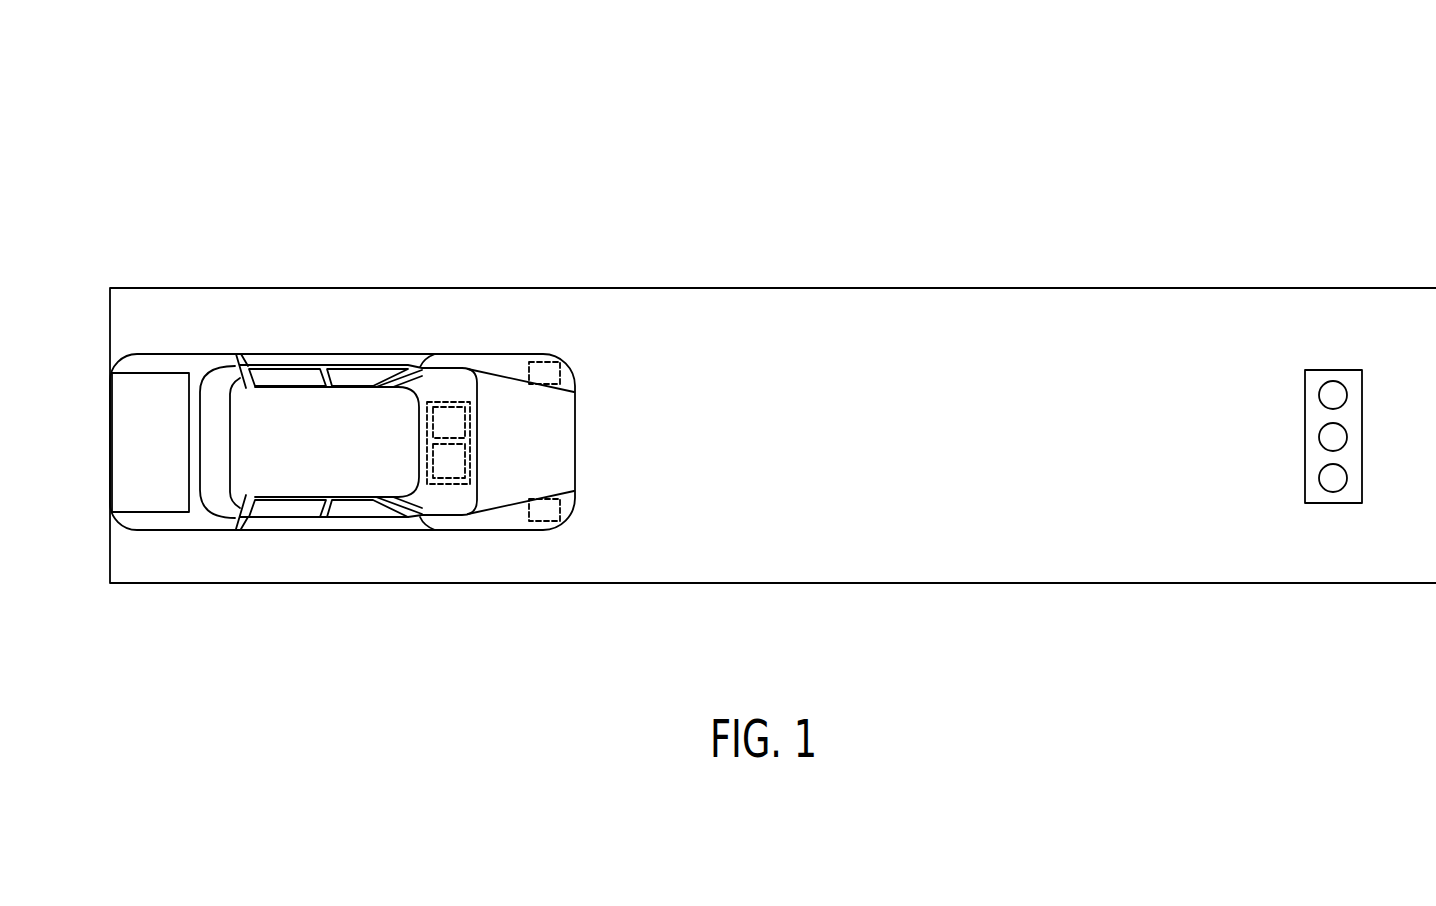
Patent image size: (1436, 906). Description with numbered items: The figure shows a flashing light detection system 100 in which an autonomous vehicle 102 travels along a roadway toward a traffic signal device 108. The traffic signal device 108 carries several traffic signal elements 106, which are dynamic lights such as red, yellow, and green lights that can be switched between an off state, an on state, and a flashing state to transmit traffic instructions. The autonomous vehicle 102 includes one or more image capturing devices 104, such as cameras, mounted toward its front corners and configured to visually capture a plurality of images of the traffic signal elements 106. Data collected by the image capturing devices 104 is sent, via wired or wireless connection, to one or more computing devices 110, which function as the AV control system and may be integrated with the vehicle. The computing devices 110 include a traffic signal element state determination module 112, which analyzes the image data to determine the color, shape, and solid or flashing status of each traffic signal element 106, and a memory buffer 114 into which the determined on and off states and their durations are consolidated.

The flashing light detection system 100 is at (135, 147).
The autonomous vehicle 102 is at (198, 365).
The image capturing devices 104 is at (563, 362).
The traffic signal elements 106 is at (1327, 478).
The traffic signal device 108 is at (1352, 412).
The computing devices 110 is at (440, 484).
The traffic signal element state determination module 112 is at (434, 419).
The memory buffer 114 is at (442, 459).